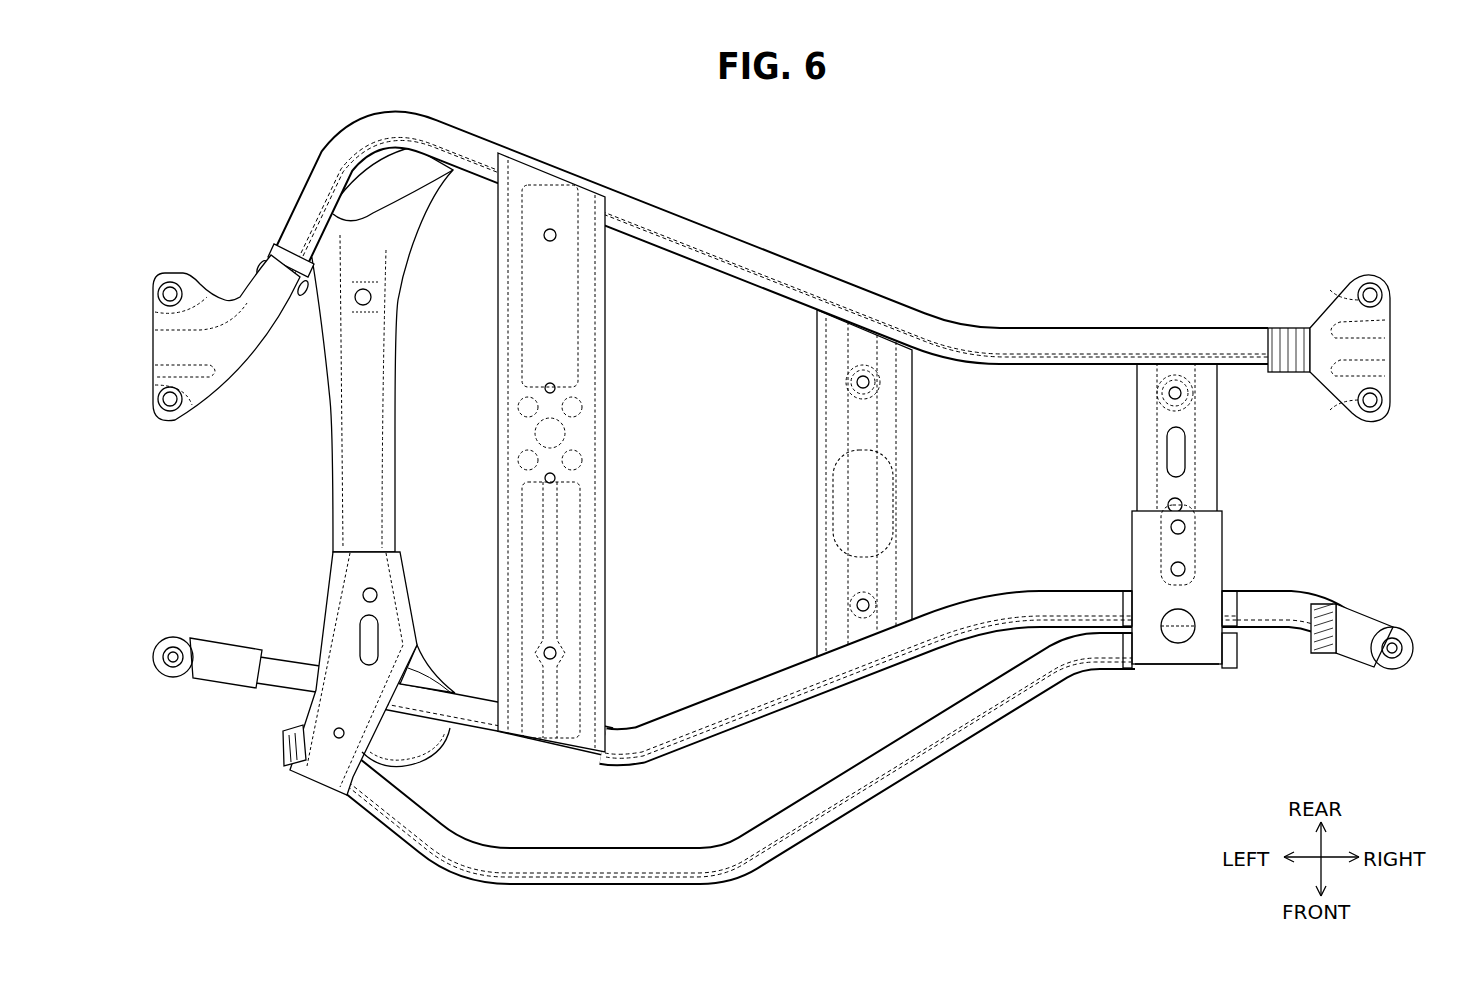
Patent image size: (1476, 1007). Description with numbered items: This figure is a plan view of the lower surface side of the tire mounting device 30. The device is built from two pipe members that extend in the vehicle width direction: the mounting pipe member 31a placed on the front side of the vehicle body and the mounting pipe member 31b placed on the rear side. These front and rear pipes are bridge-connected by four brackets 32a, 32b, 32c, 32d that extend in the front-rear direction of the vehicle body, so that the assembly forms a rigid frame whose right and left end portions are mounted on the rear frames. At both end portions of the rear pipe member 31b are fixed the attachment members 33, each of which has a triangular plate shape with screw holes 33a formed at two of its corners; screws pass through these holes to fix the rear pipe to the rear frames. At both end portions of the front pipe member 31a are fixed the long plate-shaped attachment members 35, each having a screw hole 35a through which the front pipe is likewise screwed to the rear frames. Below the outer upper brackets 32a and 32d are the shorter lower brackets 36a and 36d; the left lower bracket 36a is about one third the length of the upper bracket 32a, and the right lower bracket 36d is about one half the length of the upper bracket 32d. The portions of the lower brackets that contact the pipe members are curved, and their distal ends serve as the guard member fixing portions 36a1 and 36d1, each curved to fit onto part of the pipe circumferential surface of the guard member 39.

The tire mounting device 30 is at (883, 200).
The mounting pipe member 31a is at (676, 735).
The mounting pipe member 31b is at (725, 245).
The bracket 32a is at (340, 455).
The bracket 32b is at (500, 424).
The bracket 32c is at (817, 512).
The bracket 32d is at (1145, 466).
The attachment member 33 is at (192, 290).
The screw hole 33a is at (158, 290).
The attachment member 35 is at (205, 672).
The screw hole 35a is at (165, 652).
The lower bracket 36a is at (338, 620).
The guard member fixing portion 36a1 is at (322, 788).
The lower bracket 36d is at (1208, 545).
The guard member fixing portion 36d1 is at (1180, 658).
The guard member 39 is at (595, 866).